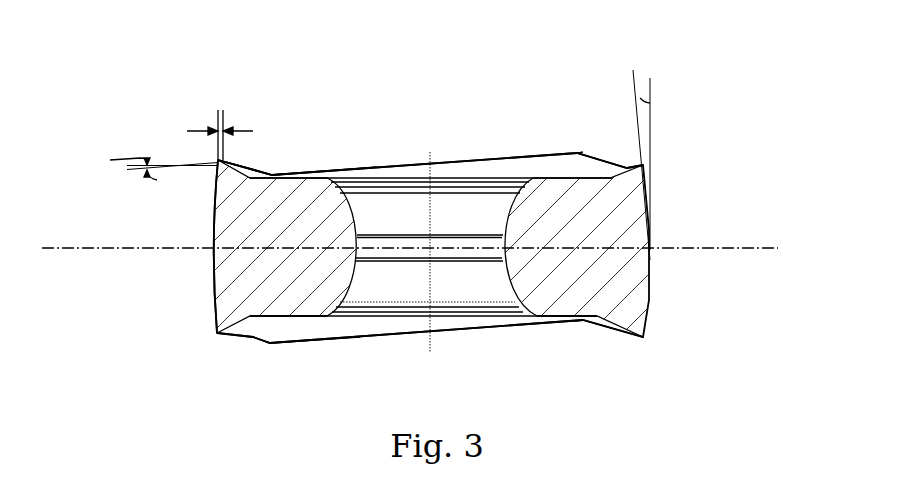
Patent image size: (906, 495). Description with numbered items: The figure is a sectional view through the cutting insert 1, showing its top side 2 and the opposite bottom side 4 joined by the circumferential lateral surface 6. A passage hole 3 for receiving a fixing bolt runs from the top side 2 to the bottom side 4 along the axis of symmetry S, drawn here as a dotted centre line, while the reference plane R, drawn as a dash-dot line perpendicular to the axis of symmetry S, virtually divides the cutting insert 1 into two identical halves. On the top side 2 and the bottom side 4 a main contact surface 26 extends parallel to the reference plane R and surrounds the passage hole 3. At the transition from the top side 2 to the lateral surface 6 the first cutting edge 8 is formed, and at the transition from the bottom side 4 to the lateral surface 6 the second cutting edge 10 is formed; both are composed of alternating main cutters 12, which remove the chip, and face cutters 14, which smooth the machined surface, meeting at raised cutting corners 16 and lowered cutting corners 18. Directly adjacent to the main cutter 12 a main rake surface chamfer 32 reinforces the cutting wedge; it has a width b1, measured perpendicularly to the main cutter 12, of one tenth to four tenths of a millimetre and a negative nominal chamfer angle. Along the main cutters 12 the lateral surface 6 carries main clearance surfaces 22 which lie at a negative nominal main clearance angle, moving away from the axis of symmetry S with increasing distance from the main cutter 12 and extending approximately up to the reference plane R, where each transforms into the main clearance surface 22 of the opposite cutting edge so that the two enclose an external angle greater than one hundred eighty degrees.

The cutting insert 1 is at (211, 64).
The top side 2 is at (463, 169).
The passage hole 3 is at (396, 284).
The bottom side 4 is at (299, 321).
The circumferential lateral surface 6 is at (215, 300).
The first cutting edge 8 is at (507, 157).
The second cutting edge 10 is at (462, 330).
The main cutter 12 is at (377, 165).
The face cutter 14 is at (248, 162).
The raised cutting corner 16 is at (583, 152).
The lowered cutting corner 18 is at (278, 172).
The main clearance surface 22 is at (212, 208).
The main contact surface 26 is at (572, 178).
The main rake surface chamfer 32 is at (217, 160).
The width of main rake surface chamfer b1 is at (218, 152).
The axis of symmetry S is at (428, 165).
The reference plane R is at (723, 247).